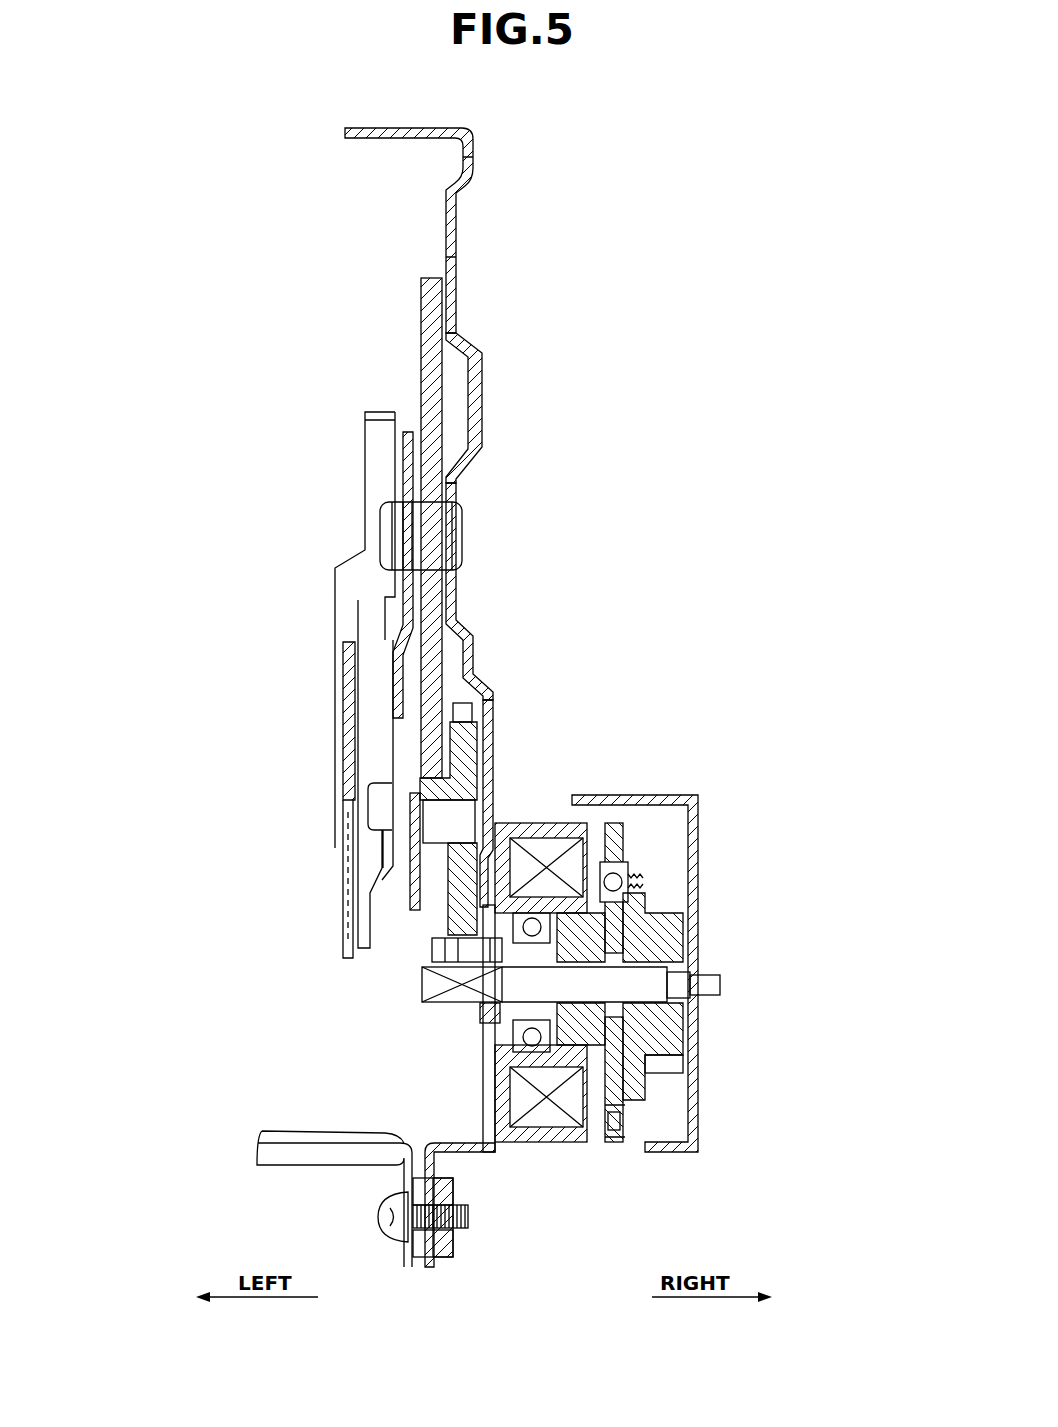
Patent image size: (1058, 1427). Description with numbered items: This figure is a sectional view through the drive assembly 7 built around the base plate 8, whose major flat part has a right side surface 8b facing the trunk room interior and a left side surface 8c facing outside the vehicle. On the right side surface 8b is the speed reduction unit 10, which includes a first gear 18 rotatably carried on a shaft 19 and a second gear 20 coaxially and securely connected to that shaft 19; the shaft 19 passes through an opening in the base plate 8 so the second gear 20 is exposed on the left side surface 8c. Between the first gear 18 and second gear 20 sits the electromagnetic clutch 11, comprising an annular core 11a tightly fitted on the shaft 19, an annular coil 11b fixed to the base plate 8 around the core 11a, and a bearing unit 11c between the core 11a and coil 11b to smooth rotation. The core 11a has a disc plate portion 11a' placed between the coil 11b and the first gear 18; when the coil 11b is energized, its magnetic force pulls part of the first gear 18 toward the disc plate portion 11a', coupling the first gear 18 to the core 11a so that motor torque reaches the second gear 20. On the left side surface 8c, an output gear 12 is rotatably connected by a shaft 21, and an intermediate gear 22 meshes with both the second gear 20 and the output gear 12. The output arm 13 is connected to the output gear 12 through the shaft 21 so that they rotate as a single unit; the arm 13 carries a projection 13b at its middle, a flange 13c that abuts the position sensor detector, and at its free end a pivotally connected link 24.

The drive unit 7 is at (552, 364).
The base plate 8 is at (420, 128).
The right side surface 8b is at (477, 634).
The left side surface 8c is at (462, 372).
The speed reduction unit 10 is at (556, 792).
The electromagnetic clutch 11 is at (597, 1150).
The annular core 11a is at (674, 991).
The disc plate portion 11a' is at (693, 869).
The annular coil 11b is at (600, 820).
The bearing unit 11c is at (623, 826).
The output gear 12 is at (421, 393).
The output arm 13 is at (400, 648).
The projection 13b is at (393, 772).
The flange 13c is at (365, 458).
The first gear 18 is at (680, 1092).
The shaft 19 is at (655, 985).
The second gear 20 is at (440, 1030).
The shaft 21 is at (462, 532).
The intermediate gear 22 is at (487, 692).
The link 24 is at (345, 893).